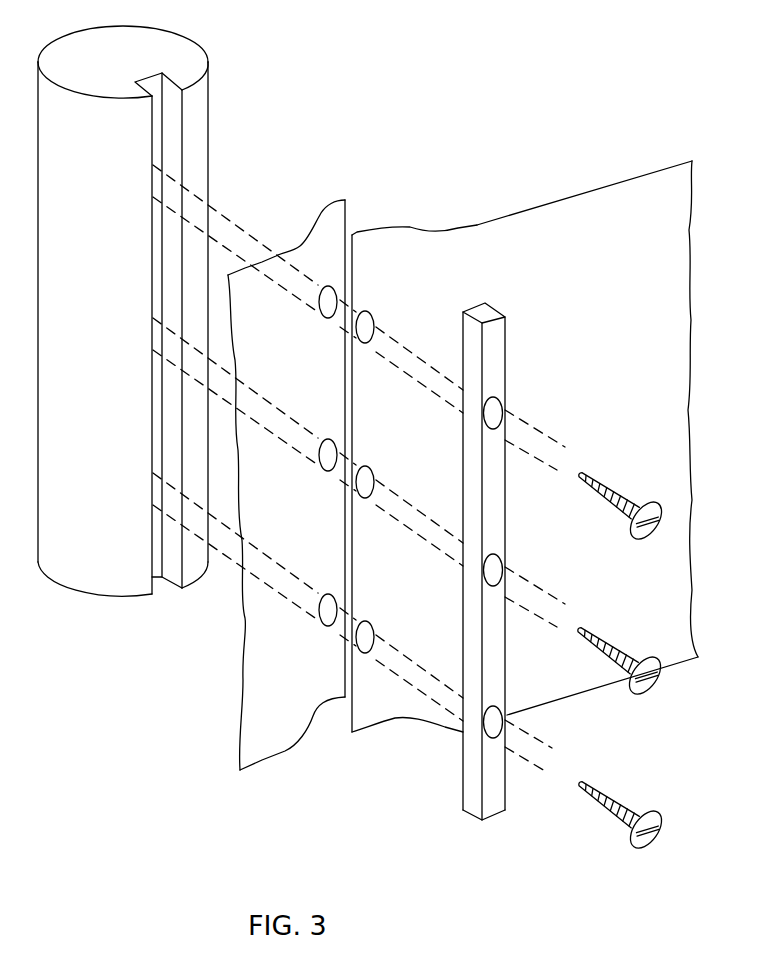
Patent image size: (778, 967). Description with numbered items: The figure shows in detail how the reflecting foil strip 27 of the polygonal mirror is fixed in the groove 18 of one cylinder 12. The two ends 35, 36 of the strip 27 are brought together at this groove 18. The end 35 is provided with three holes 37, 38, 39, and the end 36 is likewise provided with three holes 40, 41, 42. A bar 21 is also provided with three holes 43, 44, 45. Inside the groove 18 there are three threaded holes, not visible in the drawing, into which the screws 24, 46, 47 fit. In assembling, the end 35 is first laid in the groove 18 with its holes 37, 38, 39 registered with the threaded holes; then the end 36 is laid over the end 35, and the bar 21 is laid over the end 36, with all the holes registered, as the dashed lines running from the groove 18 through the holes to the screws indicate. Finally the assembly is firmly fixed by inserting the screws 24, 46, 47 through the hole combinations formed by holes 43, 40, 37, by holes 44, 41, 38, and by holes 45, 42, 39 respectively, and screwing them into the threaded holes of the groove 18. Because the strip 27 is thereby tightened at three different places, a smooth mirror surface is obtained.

The cylinder 12 is at (138, 46).
The groove 18 is at (158, 112).
The bar 21 is at (495, 333).
The screw 24 is at (650, 510).
The strip 27 is at (579, 196).
The end of the strip 35 is at (286, 485).
The end of the strip 36 is at (404, 237).
The hole 37 is at (318, 297).
The hole 38 is at (318, 458).
The hole 39 is at (318, 613).
The hole 40 is at (360, 318).
The hole 41 is at (360, 472).
The hole 42 is at (360, 628).
The hole 43 is at (496, 398).
The hole 44 is at (496, 555).
The hole 45 is at (496, 707).
The screw 46 is at (653, 665).
The screw 47 is at (652, 812).